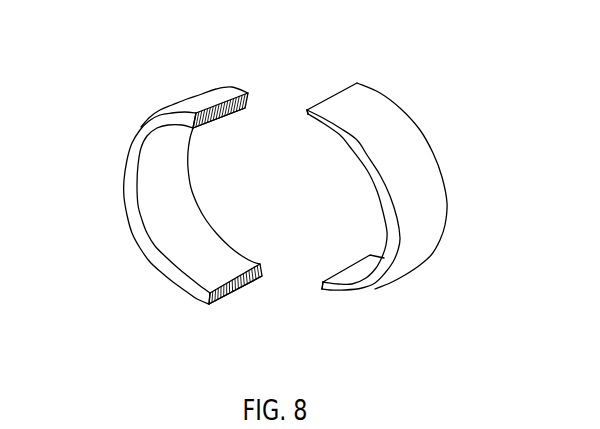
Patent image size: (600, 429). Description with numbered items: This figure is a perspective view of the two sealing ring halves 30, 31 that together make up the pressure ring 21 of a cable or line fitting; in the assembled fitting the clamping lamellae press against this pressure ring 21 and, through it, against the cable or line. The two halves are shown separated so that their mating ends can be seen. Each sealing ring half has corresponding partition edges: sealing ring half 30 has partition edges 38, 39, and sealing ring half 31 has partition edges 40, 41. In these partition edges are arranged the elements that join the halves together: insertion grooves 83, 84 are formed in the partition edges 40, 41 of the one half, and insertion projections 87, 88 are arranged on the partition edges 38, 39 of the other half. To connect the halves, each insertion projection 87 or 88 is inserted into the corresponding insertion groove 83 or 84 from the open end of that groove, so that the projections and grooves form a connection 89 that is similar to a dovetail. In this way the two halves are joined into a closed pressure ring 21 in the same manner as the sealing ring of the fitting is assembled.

The pressure ring 21 is at (280, 200).
The sealing ring half 30 is at (440, 235).
The sealing ring half 31 is at (125, 166).
The partition edge 38 is at (319, 113).
The partition edge 39 is at (336, 290).
The partition edge 40 is at (227, 89).
The partition edge 41 is at (246, 282).
The insertion groove 83 is at (215, 124).
The insertion groove 84 is at (207, 306).
The insertion projection 87 is at (307, 110).
The insertion projection 88 is at (323, 282).
The connection 89 is at (258, 207).